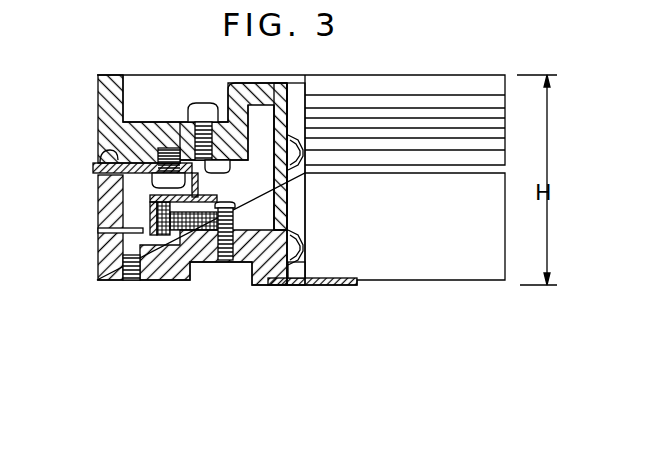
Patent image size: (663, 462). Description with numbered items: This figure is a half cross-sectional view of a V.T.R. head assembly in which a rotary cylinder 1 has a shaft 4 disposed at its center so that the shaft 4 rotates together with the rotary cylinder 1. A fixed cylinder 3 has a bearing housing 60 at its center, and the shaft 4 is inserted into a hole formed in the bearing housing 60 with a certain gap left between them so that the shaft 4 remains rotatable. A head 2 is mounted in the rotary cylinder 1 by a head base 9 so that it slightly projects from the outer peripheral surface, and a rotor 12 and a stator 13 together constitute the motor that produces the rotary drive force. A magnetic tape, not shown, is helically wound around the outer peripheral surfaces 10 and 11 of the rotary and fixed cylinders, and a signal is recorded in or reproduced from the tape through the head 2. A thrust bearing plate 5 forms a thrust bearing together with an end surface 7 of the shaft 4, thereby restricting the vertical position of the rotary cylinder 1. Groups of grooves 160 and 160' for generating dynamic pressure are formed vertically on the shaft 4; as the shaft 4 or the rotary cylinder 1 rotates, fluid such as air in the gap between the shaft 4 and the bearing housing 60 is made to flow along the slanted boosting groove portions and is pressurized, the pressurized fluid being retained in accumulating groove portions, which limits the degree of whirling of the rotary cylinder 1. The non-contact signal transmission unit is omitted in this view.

The rotary cylinder 1 is at (97, 87).
The outer peripheral surface 10 is at (97, 112).
The outer peripheral surface 11 is at (98, 243).
The head 2 is at (93, 167).
The head base 9 is at (100, 152).
The rotor 12 is at (164, 235).
The stator 13 is at (203, 230).
The fixed cylinder 3 is at (108, 281).
The thrust bearing plate 5 is at (278, 286).
The end surface 7 is at (296, 286).
The grooves 160 is at (320, 168).
The grooves 160' is at (328, 277).
The bearing housing 60 is at (270, 186).
The shaft 4 is at (298, 215).